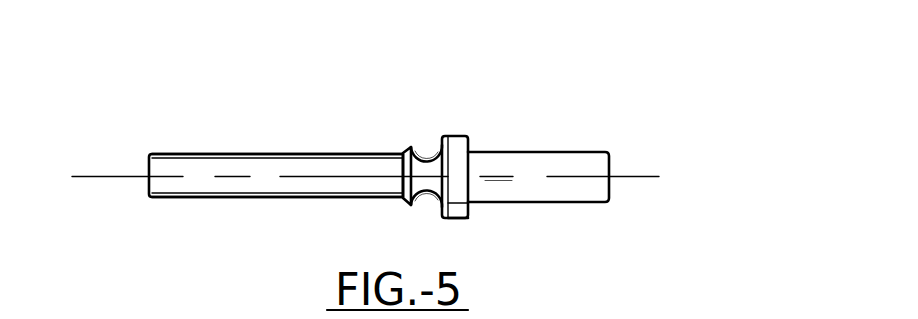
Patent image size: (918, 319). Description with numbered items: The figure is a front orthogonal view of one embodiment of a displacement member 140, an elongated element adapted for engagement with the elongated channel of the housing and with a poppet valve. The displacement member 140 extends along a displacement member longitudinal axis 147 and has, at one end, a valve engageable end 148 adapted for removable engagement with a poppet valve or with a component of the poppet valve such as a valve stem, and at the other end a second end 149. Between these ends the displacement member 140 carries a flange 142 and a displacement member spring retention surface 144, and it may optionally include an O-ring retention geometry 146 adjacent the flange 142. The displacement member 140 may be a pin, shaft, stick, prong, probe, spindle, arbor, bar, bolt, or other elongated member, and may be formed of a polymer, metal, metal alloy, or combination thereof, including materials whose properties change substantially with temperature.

The displacement member 140 is at (308, 118).
The flange 142 is at (461, 135).
The displacement member spring retention surface 144 is at (478, 212).
The O-ring retention geometry 146 is at (431, 138).
The displacement member longitudinal axis 147 is at (103, 178).
The valve engageable end 148 is at (199, 139).
The second end 149 is at (638, 136).